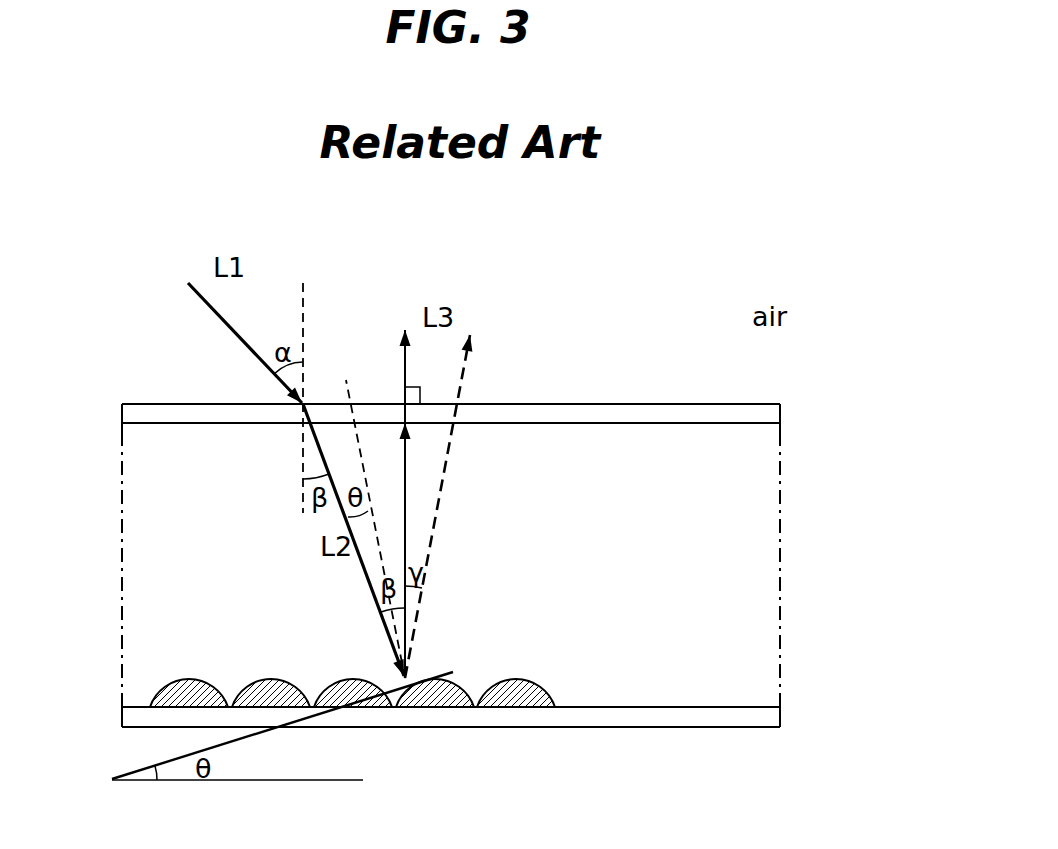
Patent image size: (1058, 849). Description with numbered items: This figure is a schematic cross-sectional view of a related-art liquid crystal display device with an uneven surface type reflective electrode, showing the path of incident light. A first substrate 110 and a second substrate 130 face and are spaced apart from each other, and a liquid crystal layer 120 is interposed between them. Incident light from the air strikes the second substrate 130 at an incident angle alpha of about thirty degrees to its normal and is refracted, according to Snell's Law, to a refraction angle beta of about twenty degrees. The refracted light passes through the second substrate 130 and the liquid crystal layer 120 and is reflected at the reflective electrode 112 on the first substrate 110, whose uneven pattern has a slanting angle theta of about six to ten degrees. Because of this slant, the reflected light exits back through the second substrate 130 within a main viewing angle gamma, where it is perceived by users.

The second substrate 130 is at (772, 412).
The liquid crystal layer 120 is at (750, 582).
The first substrate 110 is at (772, 717).
The reflective electrode 112 is at (530, 694).